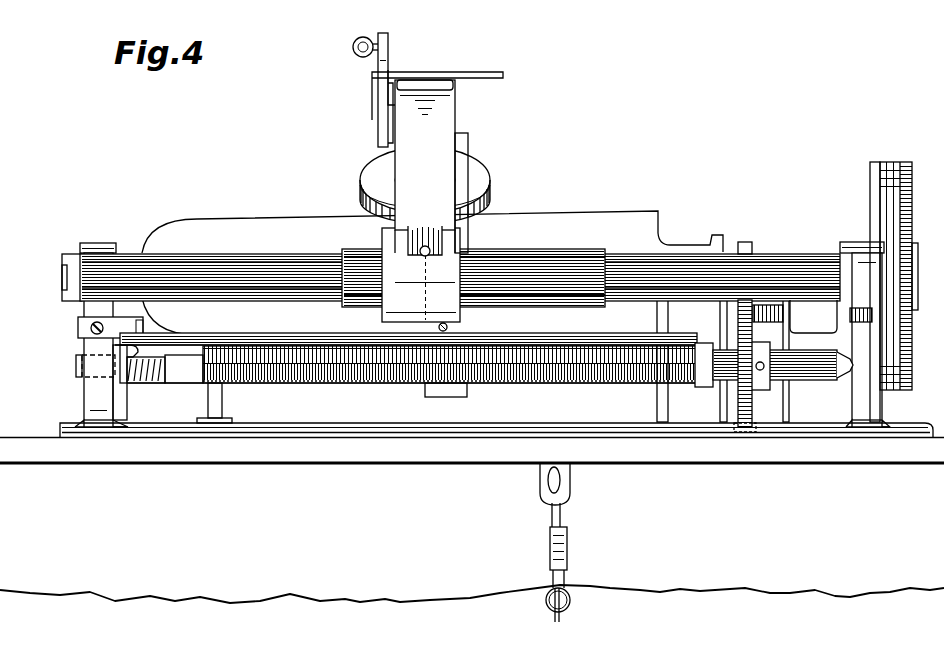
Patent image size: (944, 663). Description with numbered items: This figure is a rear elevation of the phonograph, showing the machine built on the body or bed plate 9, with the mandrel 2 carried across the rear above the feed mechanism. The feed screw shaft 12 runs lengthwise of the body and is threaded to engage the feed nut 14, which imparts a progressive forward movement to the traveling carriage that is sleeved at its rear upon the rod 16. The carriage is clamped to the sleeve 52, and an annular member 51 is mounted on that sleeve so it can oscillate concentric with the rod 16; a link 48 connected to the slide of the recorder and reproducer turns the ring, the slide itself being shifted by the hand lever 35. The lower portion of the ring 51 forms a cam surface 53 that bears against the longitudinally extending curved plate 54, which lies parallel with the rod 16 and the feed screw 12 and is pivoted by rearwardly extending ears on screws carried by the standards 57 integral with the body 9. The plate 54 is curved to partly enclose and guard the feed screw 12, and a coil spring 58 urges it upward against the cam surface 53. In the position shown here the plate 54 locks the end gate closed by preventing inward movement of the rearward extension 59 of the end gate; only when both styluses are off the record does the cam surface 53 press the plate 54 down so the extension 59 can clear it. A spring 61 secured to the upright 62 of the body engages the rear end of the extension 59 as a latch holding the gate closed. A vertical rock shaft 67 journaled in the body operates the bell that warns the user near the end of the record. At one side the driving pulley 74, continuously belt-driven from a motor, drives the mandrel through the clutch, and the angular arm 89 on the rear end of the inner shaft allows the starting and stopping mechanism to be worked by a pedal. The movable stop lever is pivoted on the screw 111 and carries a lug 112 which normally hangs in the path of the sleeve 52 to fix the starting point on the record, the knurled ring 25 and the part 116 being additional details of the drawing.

The mandrel 2 is at (226, 224).
The body or bed plate 9 is at (322, 426).
The feed screw shaft 12 is at (270, 385).
The feed nut 14 is at (442, 398).
The rod 16 is at (633, 302).
The knurled rim 25 is at (491, 198).
The hand lever 35 is at (389, 46).
The link 48 is at (472, 178).
The annular member 51 is at (466, 242).
The sleeve 52 is at (572, 249).
The cam surface 53 is at (460, 330).
The curved plate 54 is at (192, 385).
The standards 57 is at (118, 402).
The coil spring 58 is at (140, 385).
The rearward extension of the end gate 59 is at (115, 352).
The spring 61 is at (110, 322).
The upright 62 is at (82, 390).
The vertical rock shaft 67 is at (230, 391).
The driving pulley 74 is at (869, 198).
The angular arm 89 is at (571, 478).
The screw 111 is at (864, 323).
The lug 112 is at (835, 300).
The shaft 116 is at (836, 337).